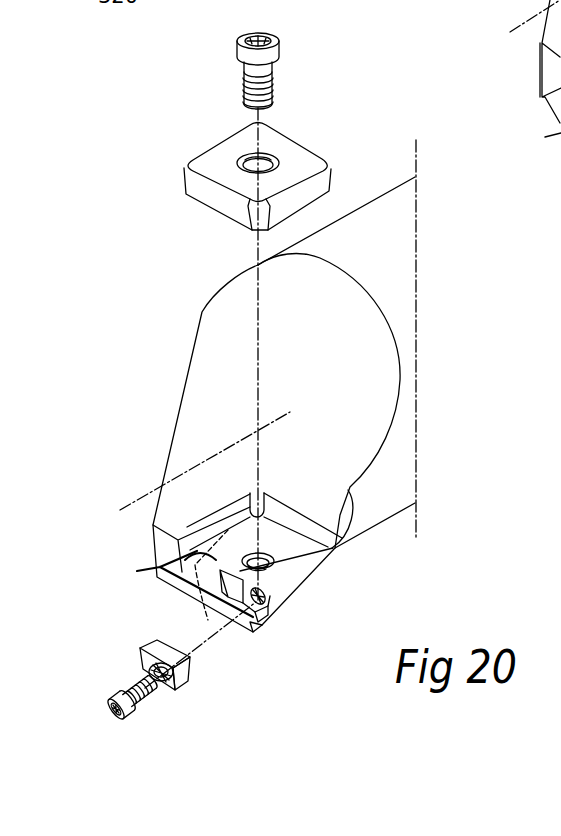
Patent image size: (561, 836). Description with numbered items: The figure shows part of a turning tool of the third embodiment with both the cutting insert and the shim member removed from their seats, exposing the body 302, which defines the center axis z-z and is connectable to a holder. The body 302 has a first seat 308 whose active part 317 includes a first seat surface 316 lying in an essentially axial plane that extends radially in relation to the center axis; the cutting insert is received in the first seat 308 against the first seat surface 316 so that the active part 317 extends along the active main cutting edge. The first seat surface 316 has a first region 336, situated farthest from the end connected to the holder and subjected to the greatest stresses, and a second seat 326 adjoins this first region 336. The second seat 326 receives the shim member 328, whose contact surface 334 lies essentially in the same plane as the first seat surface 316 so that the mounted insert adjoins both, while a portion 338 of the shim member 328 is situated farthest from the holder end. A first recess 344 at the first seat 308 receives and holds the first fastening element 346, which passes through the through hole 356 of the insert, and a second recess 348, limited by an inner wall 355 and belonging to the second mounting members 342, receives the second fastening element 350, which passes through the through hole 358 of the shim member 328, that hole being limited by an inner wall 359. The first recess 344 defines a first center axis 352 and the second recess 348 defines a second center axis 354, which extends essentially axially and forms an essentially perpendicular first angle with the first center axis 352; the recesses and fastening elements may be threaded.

The body 302 is at (275, 397).
The first seat 308 is at (345, 586).
The first seat surface 316 is at (293, 562).
The active part 317 is at (292, 584).
The second seat 326 is at (268, 626).
The shim member 328 is at (186, 684).
The contact surface 334 is at (142, 631).
The first region 336 is at (229, 578).
The portion of the shim member 338 is at (545, 71).
The second mounting members 342 is at (173, 16).
The first recess 344 is at (264, 551).
The first fastening element 346 is at (278, 69).
The second recess 348 is at (258, 603).
The second fastening element 350 is at (116, 689).
The first center axis 352 is at (257, 337).
The second center axis 354 is at (161, 643).
The inner wall 355 is at (258, 617).
The through hole 356 is at (242, 157).
The through hole 358 is at (157, 660).
The inner wall 359 is at (160, 681).